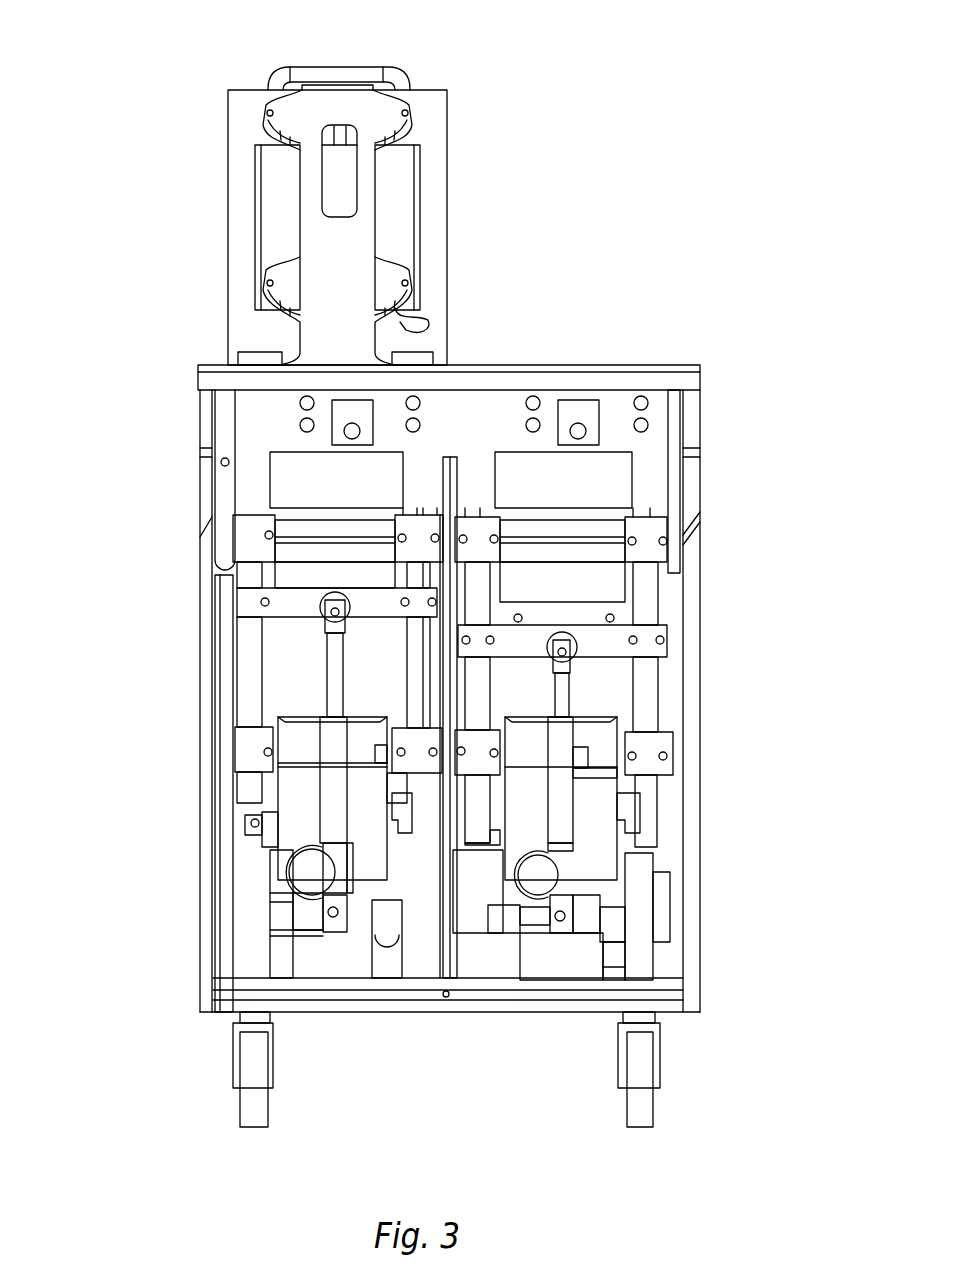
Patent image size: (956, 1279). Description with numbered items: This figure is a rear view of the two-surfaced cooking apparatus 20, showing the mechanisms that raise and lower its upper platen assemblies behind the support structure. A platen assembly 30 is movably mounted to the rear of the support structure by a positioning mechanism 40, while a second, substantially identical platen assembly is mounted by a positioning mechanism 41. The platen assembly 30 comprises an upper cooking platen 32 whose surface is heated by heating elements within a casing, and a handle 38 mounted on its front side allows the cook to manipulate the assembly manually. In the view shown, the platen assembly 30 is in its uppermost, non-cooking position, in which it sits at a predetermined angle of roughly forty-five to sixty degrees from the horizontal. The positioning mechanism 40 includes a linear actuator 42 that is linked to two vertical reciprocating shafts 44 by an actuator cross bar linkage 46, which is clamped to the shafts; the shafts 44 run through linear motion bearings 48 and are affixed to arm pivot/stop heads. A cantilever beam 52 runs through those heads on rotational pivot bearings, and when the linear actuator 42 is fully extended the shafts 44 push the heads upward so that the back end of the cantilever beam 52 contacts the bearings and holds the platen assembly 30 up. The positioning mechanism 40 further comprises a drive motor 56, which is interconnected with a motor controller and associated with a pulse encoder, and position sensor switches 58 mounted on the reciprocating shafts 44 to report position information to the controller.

The cooking apparatus 20 is at (575, 90).
The platen assembly 30 is at (200, 131).
The upper cooking platen 32 is at (461, 166).
The handle 38 is at (398, 66).
The cantilever beam 52 is at (350, 262).
The positioning mechanism 40 is at (322, 1020).
The positioning mechanism 41 is at (570, 1020).
The linear actuator 42 is at (330, 686).
The vertical reciprocating shafts 44 is at (245, 653).
The actuator cross bar linkage 46 is at (247, 600).
The linear motion bearings 48 is at (262, 516).
The drive motor 56 is at (312, 872).
The position sensor switches 58 is at (250, 823).